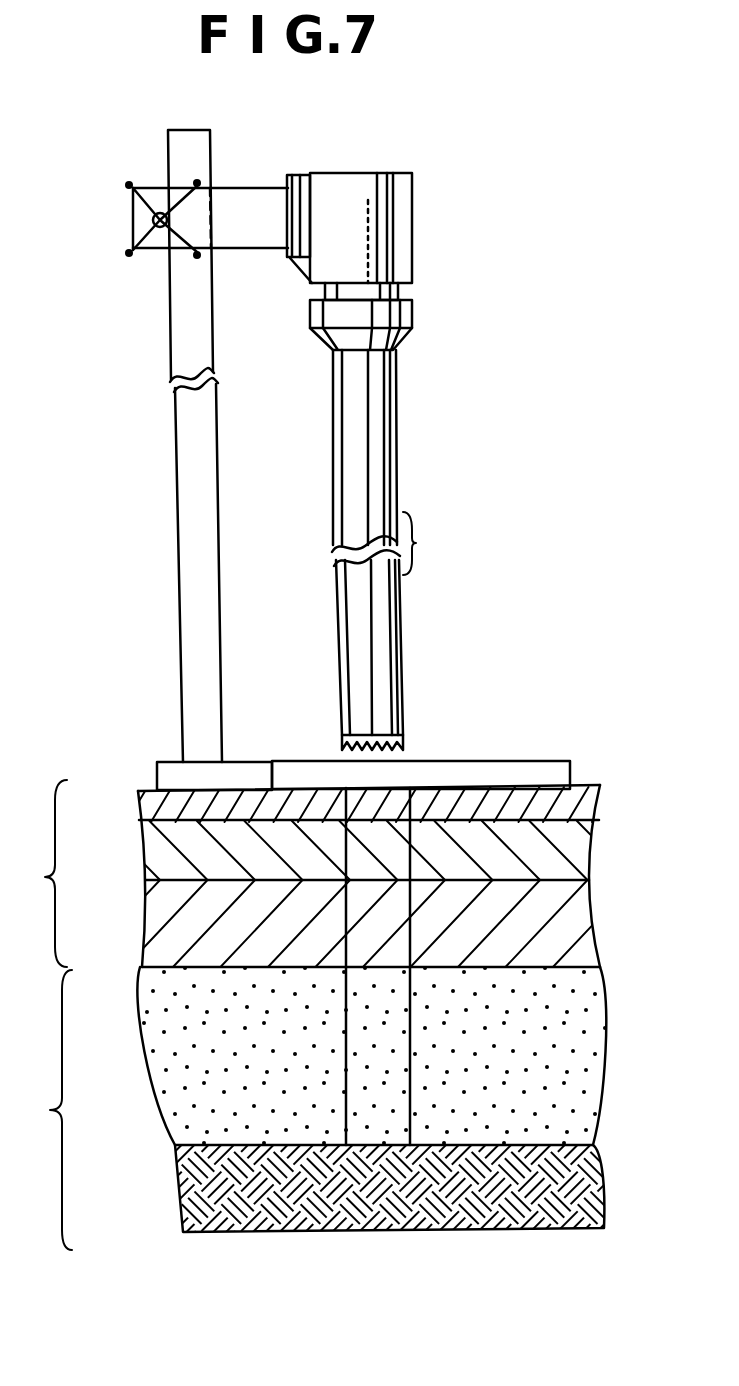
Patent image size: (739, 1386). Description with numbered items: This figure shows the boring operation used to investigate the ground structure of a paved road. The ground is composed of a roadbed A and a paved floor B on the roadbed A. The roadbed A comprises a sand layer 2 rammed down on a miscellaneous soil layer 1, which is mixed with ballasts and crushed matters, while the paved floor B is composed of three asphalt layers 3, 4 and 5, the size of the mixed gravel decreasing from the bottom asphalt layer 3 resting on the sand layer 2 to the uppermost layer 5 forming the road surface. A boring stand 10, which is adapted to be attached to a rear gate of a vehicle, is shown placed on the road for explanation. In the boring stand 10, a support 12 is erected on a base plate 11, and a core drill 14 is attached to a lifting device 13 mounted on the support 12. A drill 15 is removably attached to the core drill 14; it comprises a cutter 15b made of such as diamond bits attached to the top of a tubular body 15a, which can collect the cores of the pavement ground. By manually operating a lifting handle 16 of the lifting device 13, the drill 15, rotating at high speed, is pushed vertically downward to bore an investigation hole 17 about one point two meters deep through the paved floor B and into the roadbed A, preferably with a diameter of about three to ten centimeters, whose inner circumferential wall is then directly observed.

The miscellaneous soil layer 1 is at (183, 1190).
The sand layer 2 is at (220, 1073).
The bottom asphalt layer 3 is at (217, 928).
The asphalt layer 4 is at (207, 860).
The uppermost asphalt layer 5 is at (175, 807).
The boring stand 10 is at (161, 446).
The base plate 11 is at (535, 778).
The support 12 is at (192, 425).
The lifting device 13 is at (251, 210).
The core drill 14 is at (394, 230).
The drill 15 is at (408, 551).
The tubular body 15a is at (382, 633).
The cutter 15b is at (393, 740).
The lifting handle 16 is at (133, 185).
The investigation hole 17 is at (412, 912).
The roadbed A is at (50, 1110).
The paved floor B is at (47, 873).